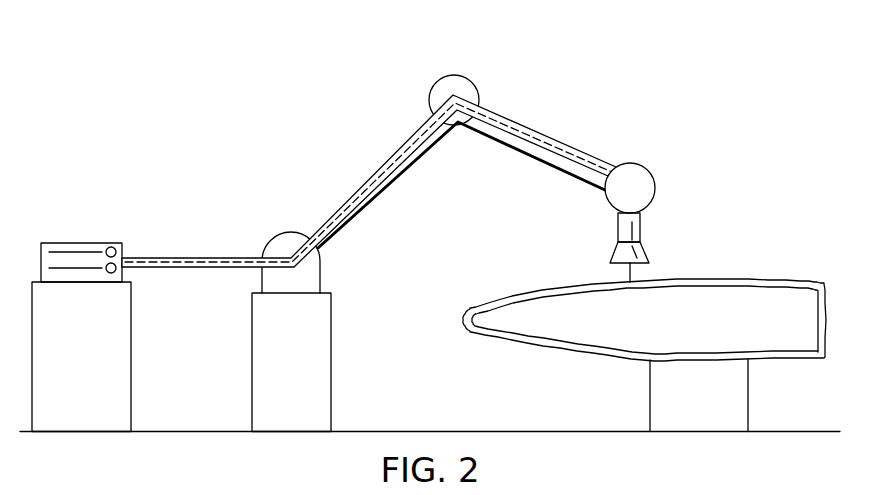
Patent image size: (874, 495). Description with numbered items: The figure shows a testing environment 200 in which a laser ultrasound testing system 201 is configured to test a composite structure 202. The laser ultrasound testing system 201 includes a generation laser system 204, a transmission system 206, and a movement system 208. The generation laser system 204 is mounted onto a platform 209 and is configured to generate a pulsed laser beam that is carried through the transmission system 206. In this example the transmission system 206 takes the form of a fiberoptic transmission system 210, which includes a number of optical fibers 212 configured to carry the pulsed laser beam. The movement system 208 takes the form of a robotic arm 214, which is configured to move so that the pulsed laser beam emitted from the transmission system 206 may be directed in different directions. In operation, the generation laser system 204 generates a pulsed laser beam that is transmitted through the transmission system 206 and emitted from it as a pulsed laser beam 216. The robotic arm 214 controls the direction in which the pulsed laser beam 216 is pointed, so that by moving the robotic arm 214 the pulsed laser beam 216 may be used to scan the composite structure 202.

The testing environment 200 is at (351, 57).
The laser ultrasound testing system 201 is at (85, 168).
The composite structure 202 is at (733, 278).
The generation laser system 204 is at (82, 243).
The transmission system 206 is at (150, 251).
The movement system 208 is at (365, 171).
The platform 209 is at (62, 372).
The fiberoptic transmission system 210 is at (216, 282).
The number of optical fibers 212 is at (203, 258).
The robotic arm 214 is at (400, 178).
The pulsed laser beam 216 is at (624, 273).